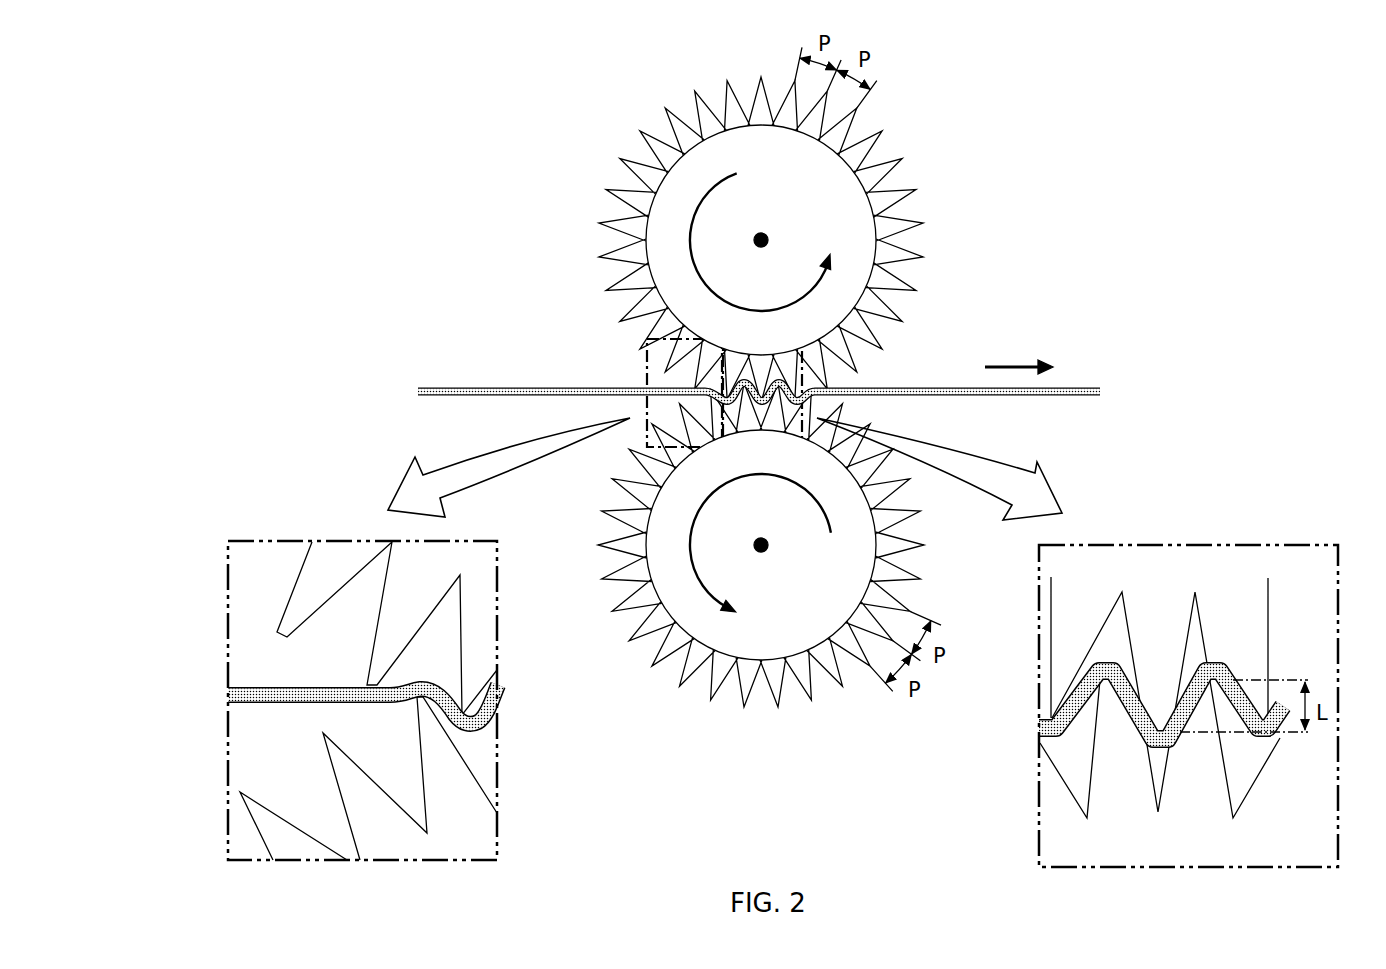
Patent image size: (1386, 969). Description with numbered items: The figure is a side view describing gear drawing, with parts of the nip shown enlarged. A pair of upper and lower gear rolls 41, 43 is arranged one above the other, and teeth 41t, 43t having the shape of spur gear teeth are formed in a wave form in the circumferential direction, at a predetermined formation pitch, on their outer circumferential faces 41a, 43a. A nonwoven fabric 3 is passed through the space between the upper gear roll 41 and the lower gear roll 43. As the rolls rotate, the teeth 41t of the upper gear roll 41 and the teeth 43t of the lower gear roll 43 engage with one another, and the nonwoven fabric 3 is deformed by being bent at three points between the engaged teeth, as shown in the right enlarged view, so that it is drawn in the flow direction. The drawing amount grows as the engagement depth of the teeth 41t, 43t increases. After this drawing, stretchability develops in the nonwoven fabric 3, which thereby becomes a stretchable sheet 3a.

The upper gear roll 41 is at (850, 193).
The outer circumferential face 41a is at (632, 162).
The teeth 41t is at (611, 256).
The lower gear roll 43 is at (762, 643).
The outer circumferential face 43a is at (652, 663).
The teeth 43t is at (602, 511).
The nonwoven fabric 3 is at (474, 388).
The stretchable sheet 3a is at (1080, 388).